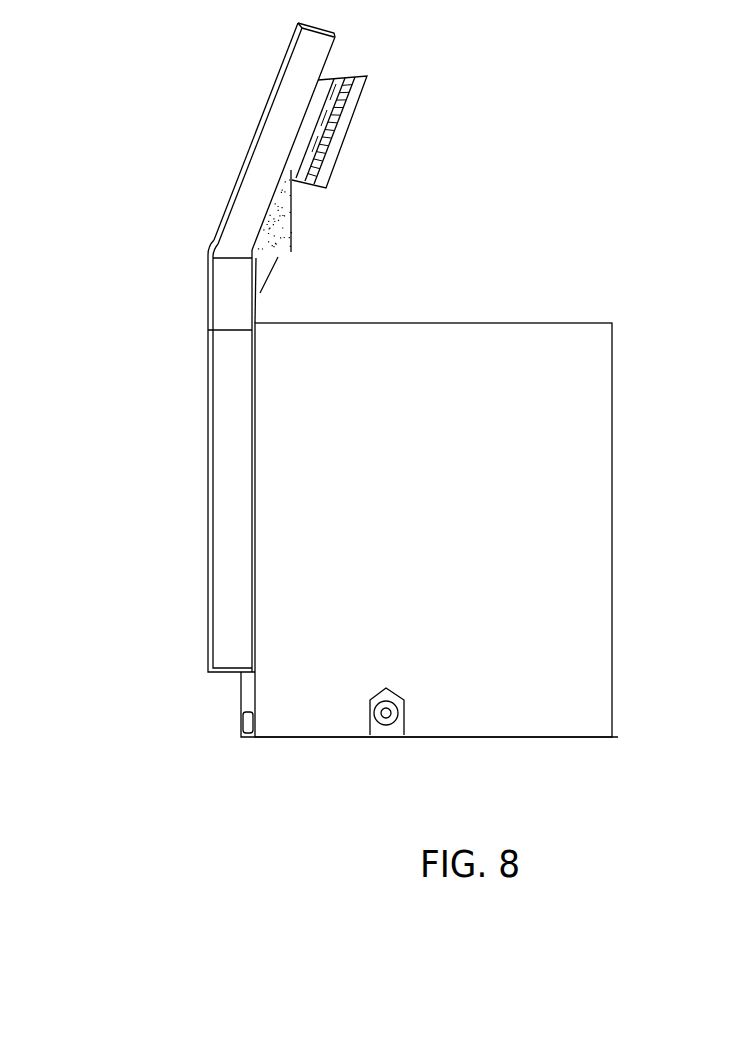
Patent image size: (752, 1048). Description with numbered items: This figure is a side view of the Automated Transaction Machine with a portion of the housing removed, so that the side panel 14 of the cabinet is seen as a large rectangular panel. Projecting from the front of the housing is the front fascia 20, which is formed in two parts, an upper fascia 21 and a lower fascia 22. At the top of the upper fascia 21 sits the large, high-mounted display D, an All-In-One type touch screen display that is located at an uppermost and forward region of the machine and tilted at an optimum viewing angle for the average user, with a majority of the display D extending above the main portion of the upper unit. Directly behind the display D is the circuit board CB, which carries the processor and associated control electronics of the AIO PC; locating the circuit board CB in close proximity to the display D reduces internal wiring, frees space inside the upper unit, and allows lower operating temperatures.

The display D is at (238, 95).
The circuit board CB is at (384, 128).
The front fascia 20 is at (317, 452).
The upper fascia 21 is at (190, 194).
The lower fascia 22 is at (188, 560).
The side panel 14 is at (433, 530).